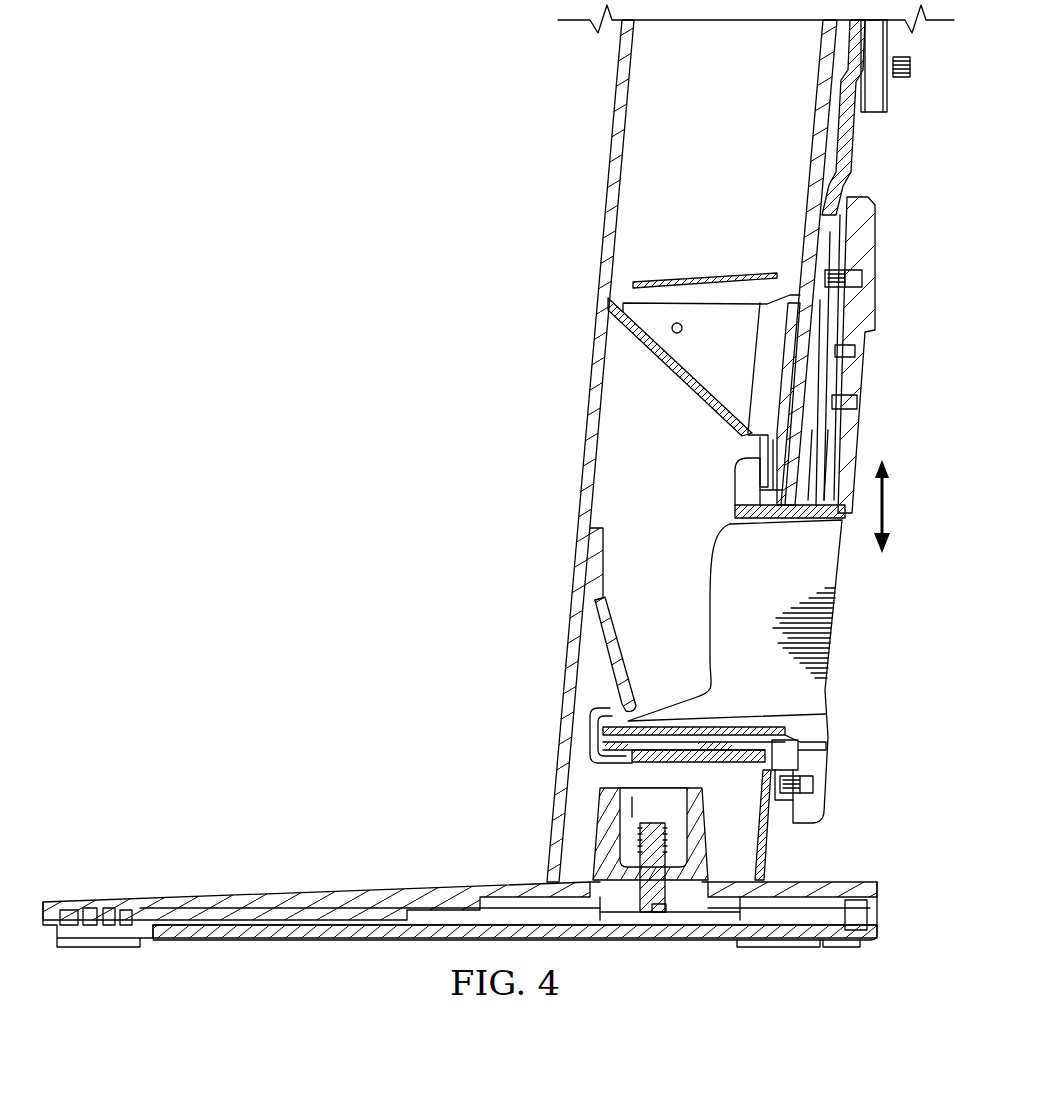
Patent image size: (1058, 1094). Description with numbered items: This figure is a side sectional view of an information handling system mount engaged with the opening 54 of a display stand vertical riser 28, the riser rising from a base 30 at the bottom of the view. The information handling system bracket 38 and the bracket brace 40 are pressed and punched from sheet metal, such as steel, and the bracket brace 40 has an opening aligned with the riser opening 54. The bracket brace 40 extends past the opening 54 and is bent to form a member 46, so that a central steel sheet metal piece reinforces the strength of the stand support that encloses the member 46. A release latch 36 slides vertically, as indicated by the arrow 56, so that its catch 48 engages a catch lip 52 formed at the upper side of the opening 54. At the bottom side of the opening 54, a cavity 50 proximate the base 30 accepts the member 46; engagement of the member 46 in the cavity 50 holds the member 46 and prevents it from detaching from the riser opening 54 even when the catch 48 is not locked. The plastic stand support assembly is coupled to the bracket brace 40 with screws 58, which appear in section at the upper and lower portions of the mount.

The vertical riser 28 is at (645, 207).
The base 30 is at (260, 938).
The release latch 36 is at (862, 378).
The information handling system bracket 38 is at (897, 90).
The bracket brace 40 is at (858, 160).
The member 46 is at (623, 762).
The catch 48 is at (745, 507).
The cavity 50 is at (596, 758).
The catch lip 52 is at (766, 480).
The opening 54 is at (618, 461).
The arrow 56 is at (890, 508).
The screws 58 is at (862, 280).